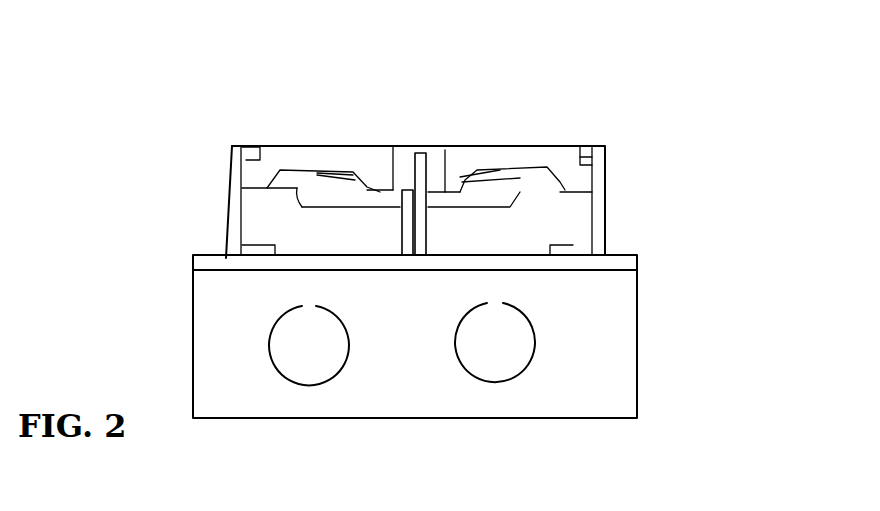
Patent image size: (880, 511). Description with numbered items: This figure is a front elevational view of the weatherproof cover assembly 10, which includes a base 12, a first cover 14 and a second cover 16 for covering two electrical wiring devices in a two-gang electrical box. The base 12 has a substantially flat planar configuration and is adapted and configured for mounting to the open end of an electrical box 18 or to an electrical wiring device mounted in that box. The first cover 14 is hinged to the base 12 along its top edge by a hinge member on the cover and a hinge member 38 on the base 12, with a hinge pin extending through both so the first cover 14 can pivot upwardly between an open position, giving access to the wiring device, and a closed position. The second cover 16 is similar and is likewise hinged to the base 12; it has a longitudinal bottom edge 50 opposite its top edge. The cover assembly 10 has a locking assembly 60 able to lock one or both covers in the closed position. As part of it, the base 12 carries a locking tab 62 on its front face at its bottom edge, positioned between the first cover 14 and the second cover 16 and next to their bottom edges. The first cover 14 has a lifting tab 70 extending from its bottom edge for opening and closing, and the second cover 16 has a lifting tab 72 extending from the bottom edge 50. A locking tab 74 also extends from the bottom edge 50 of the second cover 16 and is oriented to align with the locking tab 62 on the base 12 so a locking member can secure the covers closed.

The weatherproof cover assembly 10 is at (135, 187).
The base 12 is at (634, 253).
The first cover 14 is at (527, 167).
The second cover 16 is at (306, 165).
The electrical box 18 is at (637, 331).
The hinge member 38 is at (605, 153).
The bottom edge 50 is at (367, 247).
The locking assembly 60 is at (422, 150).
The locking tab 62 is at (427, 233).
The lifting tab 70 is at (570, 247).
The lifting tab 72 is at (255, 257).
The locking tab 74 is at (410, 187).